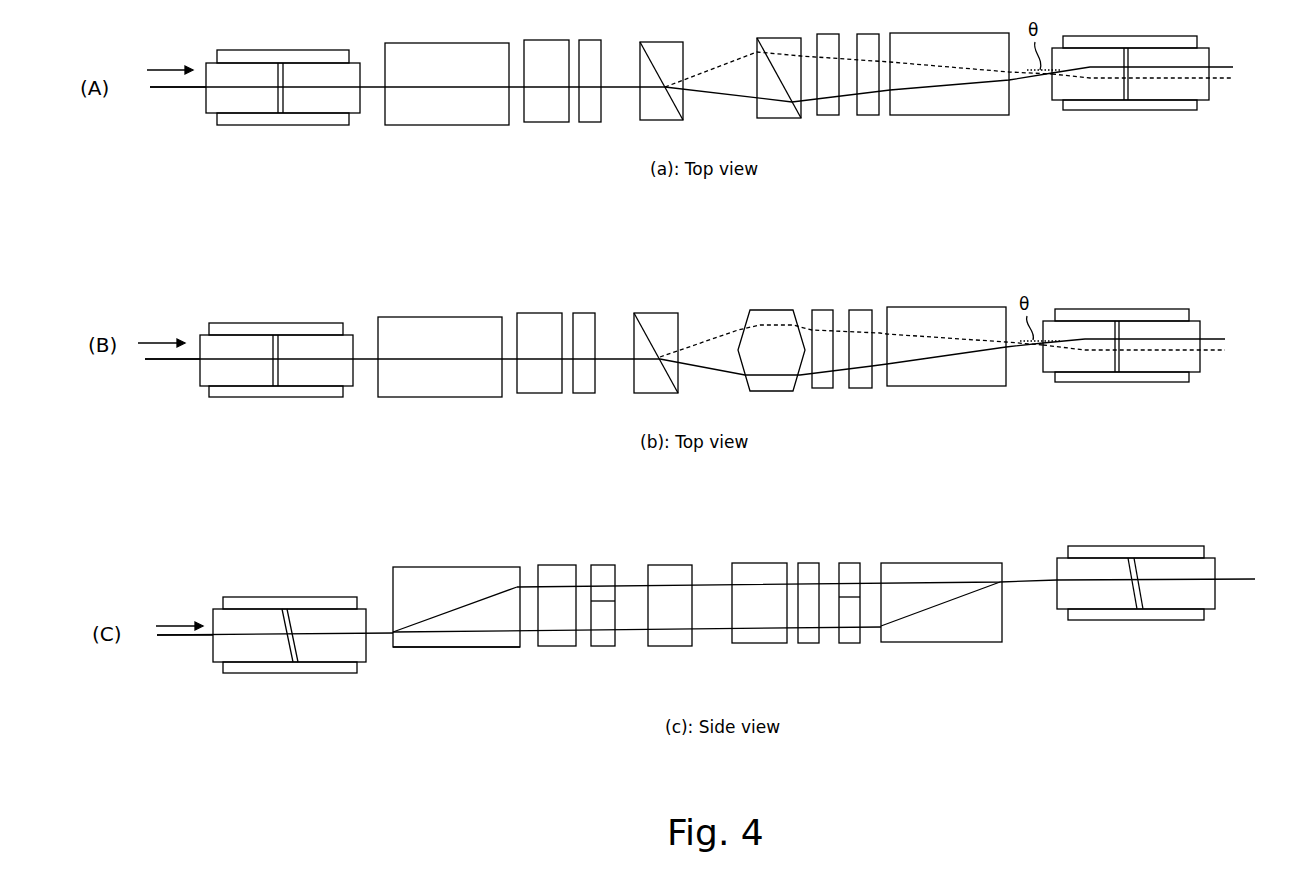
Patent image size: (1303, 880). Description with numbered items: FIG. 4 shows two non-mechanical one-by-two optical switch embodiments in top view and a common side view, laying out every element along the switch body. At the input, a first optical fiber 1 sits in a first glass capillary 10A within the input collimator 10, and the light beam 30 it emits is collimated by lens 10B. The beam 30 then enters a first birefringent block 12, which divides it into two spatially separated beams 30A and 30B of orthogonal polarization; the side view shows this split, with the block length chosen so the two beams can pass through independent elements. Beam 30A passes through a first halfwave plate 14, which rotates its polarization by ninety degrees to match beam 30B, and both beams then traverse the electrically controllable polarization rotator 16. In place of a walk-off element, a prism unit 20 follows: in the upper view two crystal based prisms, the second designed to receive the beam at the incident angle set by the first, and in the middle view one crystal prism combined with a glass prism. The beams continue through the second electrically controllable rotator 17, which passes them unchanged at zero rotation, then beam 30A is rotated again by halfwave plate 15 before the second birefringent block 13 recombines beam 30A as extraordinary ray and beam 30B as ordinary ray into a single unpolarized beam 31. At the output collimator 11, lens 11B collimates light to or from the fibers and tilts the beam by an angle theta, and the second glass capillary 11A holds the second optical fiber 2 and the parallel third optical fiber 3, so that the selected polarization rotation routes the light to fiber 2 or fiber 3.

The first optical fiber 1 is at (175, 241).
The second optical fiber 2 is at (1139, 189).
The third optical fiber 3 is at (1139, 229).
The first collimator assembly 10 is at (283, 349).
The first glass capillary 10A is at (240, 108).
The first lens 10B is at (312, 105).
The second collimator assembly 11 is at (1129, 314).
The second glass capillary 11A is at (1097, 88).
The second lens 11B is at (1148, 88).
The first birefringent block 12 is at (449, 330).
The second birefringent block 13 is at (945, 324).
The first halfwave plate 14 is at (546, 328).
The halfwave plate 15 is at (859, 353).
The first electrically controllable polarization rotator 16 is at (592, 327).
The second electrically controllable polarization rotator 17 is at (818, 324).
The prism pair 20 is at (773, 20).
The light beam 30 is at (437, 90).
The first polarized beam 30A is at (438, 636).
The second polarized beam 30B is at (490, 596).
The combined beam 31 is at (1156, 595).